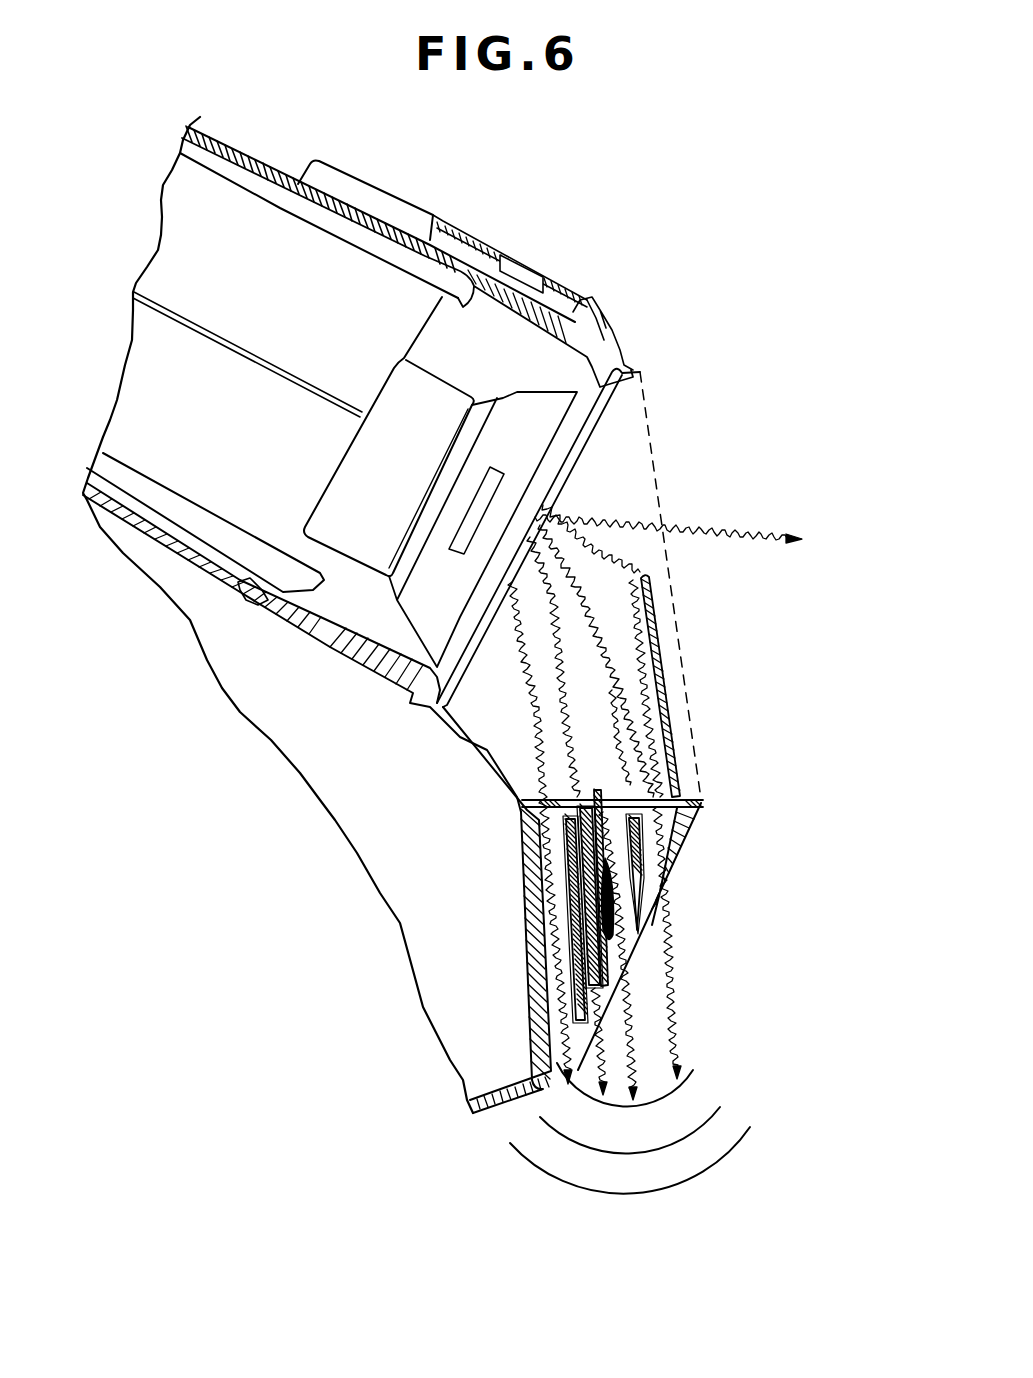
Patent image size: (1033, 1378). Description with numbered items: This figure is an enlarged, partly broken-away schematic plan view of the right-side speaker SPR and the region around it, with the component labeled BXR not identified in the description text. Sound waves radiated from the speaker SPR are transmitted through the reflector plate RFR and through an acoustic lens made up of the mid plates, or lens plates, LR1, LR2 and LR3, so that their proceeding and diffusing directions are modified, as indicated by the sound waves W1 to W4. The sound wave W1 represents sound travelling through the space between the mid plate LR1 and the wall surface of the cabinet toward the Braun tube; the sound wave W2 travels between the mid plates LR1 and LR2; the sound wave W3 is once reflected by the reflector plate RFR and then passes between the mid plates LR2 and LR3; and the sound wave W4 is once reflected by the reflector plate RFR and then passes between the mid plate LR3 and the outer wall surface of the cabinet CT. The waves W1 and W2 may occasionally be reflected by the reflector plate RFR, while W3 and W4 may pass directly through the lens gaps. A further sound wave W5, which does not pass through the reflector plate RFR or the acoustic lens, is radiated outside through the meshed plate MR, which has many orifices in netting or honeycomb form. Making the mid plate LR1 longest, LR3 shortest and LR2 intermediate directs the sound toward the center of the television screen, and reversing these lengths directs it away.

The rear speaker box BXR is at (242, 220).
The right-side speaker SPR is at (443, 397).
The cabinet CT is at (527, 890).
The reflector plate RFR is at (667, 710).
The meshed plate MR is at (683, 643).
The mid plate LR1 is at (580, 1005).
The mid plate LR2 is at (613, 963).
The mid plate LR3 is at (640, 937).
The sound wave W1 is at (527, 693).
The sound wave W2 is at (612, 1067).
The sound wave W3 is at (633, 782).
The sound wave W4 is at (597, 567).
The sound wave W5 is at (693, 523).